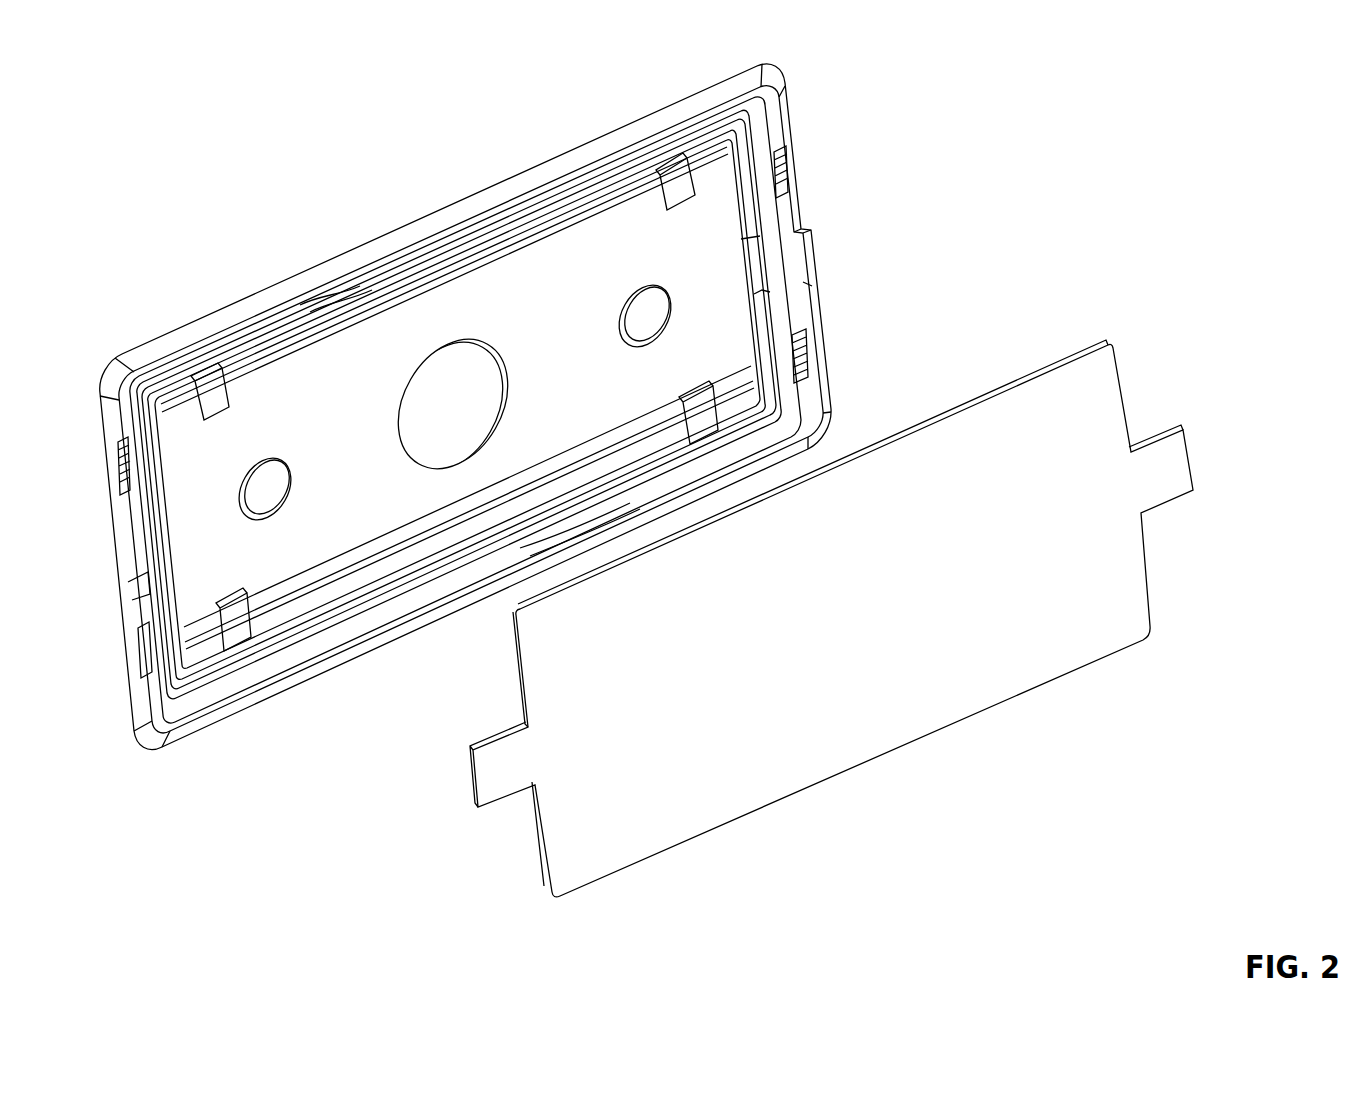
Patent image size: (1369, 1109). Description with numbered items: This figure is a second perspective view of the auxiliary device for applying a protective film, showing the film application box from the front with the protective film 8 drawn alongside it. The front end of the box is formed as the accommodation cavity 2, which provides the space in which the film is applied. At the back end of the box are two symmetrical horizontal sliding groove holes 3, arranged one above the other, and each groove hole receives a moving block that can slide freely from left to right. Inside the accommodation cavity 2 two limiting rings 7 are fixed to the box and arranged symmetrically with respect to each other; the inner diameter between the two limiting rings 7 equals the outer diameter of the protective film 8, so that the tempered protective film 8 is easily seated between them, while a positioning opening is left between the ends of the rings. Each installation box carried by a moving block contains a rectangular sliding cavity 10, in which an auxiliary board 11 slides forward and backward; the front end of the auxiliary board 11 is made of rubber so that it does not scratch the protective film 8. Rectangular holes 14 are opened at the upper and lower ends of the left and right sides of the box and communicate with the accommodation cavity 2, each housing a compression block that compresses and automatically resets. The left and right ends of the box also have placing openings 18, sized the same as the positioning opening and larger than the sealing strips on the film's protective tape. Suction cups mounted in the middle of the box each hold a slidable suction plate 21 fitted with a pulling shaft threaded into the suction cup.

The accommodation cavity 2 is at (287, 575).
The sliding groove hole 3 is at (427, 287).
The limiting ring 7 is at (201, 683).
The protective film 8 is at (759, 790).
The sliding cavity 10 is at (673, 168).
The auxiliary board 11 is at (238, 630).
The rectangular hole 14 is at (142, 656).
The placing opening 18 is at (797, 258).
The suction plate 21 is at (636, 318).